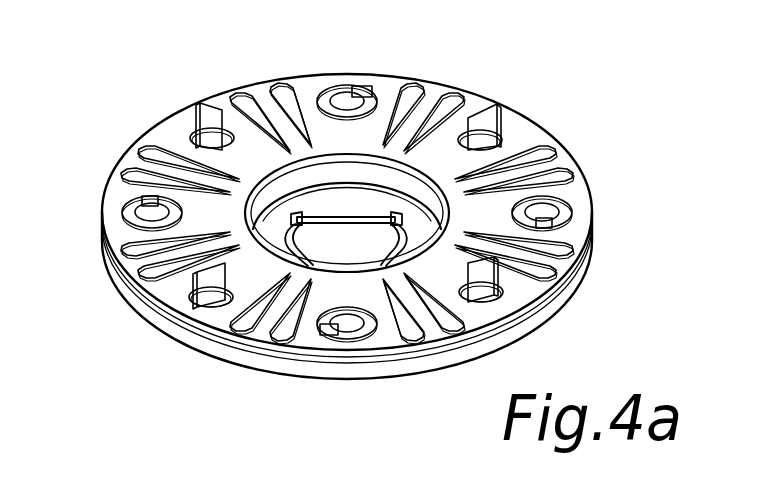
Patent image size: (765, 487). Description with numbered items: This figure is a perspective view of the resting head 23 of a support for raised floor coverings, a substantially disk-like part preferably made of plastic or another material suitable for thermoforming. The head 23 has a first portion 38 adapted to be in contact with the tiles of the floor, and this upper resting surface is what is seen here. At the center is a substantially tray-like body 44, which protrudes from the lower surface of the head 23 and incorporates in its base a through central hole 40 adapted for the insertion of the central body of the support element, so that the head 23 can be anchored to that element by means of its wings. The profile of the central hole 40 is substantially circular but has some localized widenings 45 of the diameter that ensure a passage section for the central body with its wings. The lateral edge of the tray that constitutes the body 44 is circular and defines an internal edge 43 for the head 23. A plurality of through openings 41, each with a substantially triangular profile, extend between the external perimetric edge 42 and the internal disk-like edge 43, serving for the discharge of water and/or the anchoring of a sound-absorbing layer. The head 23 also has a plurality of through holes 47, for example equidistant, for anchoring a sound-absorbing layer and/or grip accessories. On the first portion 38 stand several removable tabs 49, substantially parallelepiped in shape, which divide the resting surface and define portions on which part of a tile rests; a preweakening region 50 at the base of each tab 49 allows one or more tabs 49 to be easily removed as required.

The resting head 23 is at (596, 148).
The first portion 38 is at (246, 252).
The central hole 40 is at (390, 252).
The through openings 41 is at (140, 148).
The external perimetric edge 42 is at (574, 208).
The internal edge 43 is at (349, 258).
The tray-like body 44 is at (374, 190).
The localized widenings 45 is at (313, 200).
The through holes 47 is at (130, 198).
The removable tabs 49 is at (190, 88).
The preweakening region 50 is at (185, 128).